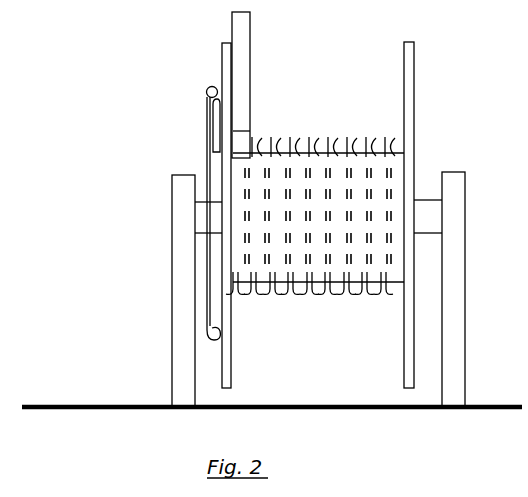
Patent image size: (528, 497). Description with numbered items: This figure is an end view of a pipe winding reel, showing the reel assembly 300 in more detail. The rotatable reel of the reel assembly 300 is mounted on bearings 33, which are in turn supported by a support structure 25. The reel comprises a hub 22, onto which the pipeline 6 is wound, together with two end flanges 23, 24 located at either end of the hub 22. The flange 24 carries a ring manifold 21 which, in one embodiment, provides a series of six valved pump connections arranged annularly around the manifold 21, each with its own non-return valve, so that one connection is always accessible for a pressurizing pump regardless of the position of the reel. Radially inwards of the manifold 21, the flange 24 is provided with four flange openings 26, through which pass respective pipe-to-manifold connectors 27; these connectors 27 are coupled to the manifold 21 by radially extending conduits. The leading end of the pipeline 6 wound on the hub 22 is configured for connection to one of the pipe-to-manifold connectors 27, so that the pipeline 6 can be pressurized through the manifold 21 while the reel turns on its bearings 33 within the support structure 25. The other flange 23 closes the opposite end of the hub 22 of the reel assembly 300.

The reel assembly 300 is at (272, 206).
The pipeline 6 is at (249, 64).
The ring manifold 21 is at (211, 87).
The hub 22 is at (404, 244).
The end flange 23 is at (419, 122).
The end flange 24 is at (222, 371).
The support structure 25 is at (467, 320).
The flange openings 26 is at (207, 132).
The pipe-to-manifold connectors 27 is at (203, 155).
The bearings 33 is at (423, 186).